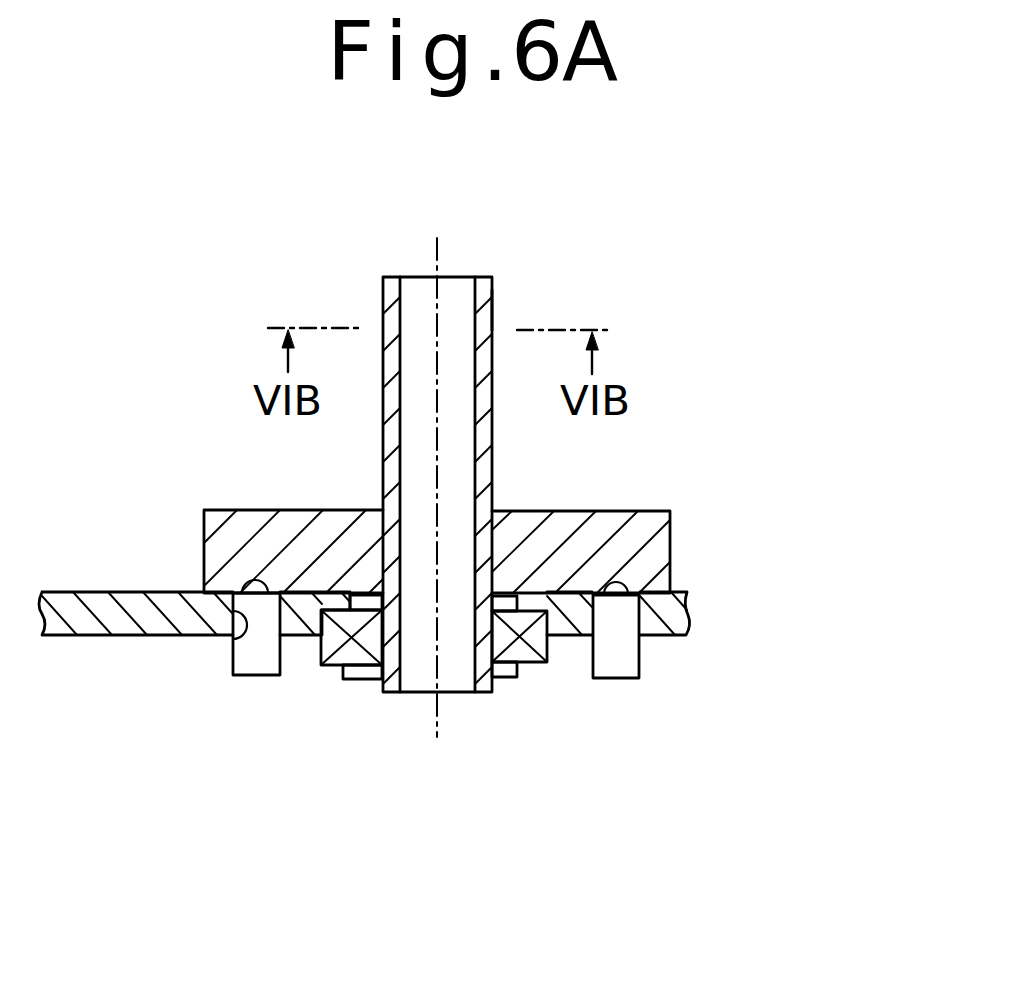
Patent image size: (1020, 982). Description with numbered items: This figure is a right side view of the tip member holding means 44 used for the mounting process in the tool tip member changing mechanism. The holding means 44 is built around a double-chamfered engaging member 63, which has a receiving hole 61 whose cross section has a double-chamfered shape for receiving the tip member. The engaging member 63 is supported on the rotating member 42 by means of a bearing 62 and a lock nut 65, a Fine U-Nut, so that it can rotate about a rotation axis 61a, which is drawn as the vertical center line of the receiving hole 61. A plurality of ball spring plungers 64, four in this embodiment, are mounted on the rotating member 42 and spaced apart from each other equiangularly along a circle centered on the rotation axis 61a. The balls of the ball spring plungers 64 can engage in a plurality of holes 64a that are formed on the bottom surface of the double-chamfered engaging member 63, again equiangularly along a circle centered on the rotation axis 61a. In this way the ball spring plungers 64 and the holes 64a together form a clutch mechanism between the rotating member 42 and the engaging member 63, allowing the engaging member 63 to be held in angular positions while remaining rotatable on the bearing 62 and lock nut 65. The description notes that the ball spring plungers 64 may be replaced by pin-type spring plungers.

The tip member holding means for the mounting process 44 is at (712, 376).
The receiving hole 61 is at (403, 307).
The rotation axis 61a is at (437, 268).
The double-chamfered engaging member 63 is at (493, 305).
The rotating member 42 is at (680, 622).
The ball spring plungers 64 is at (627, 658).
The holes 64a is at (233, 658).
The lock nut 65 is at (360, 677).
The bearing 62 is at (530, 667).